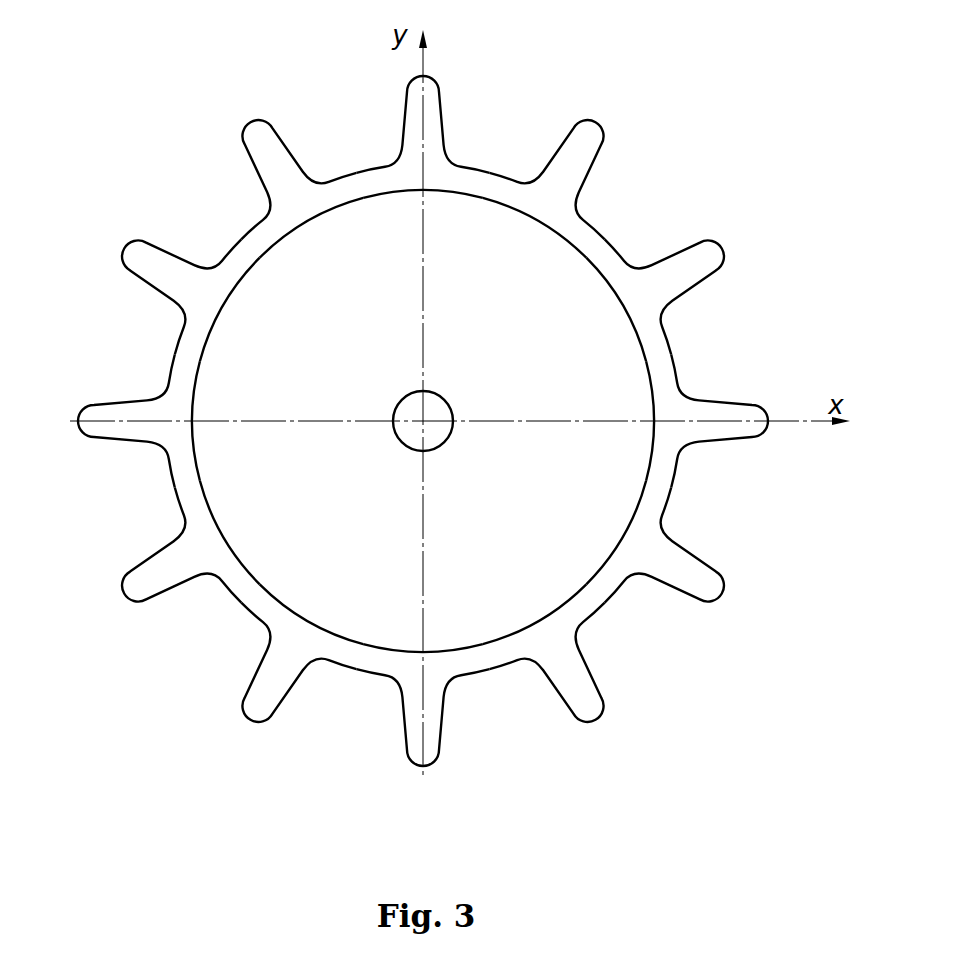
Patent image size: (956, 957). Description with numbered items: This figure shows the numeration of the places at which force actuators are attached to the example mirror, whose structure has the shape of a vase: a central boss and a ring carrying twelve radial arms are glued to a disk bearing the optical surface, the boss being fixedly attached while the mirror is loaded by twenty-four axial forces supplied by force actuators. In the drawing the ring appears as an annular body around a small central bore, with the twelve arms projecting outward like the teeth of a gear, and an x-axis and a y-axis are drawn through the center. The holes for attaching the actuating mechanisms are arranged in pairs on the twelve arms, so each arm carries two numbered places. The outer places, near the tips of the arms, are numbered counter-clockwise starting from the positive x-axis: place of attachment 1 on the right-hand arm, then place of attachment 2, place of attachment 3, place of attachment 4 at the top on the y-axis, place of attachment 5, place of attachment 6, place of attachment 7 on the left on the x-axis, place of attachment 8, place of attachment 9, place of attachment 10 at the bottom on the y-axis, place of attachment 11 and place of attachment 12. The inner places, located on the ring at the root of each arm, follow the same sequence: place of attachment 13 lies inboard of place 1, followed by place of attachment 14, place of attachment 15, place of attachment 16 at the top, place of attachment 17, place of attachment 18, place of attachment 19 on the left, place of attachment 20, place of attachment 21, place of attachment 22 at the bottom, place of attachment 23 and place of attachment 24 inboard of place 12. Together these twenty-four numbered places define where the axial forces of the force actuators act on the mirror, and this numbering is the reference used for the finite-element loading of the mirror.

The place of attachment for force actuator 1 is at (755, 416).
The place of attachment for force actuator 2 is at (688, 267).
The place of attachment for force actuator 3 is at (571, 148).
The place of attachment for force actuator 4 is at (423, 93).
The place of attachment for force actuator 5 is at (298, 148).
The place of attachment for force actuator 6 is at (166, 262).
The place of attachment for force actuator 7 is at (103, 406).
The place of attachment for force actuator 8 is at (147, 545).
The place of attachment for force actuator 9 is at (261, 669).
The place of attachment for force actuator 10 is at (411, 727).
The place of attachment for force actuator 11 is at (547, 685).
The place of attachment for force actuator 12 is at (664, 583).
The place of attachment for force actuator 13 is at (693, 413).
The place of attachment for force actuator 14 is at (639, 277).
The place of attachment for force actuator 15 is at (576, 182).
The place of attachment for force actuator 16 is at (430, 148).
The place of attachment for force actuator 17 is at (312, 182).
The place of attachment for force actuator 18 is at (211, 274).
The place of attachment for force actuator 19 is at (155, 411).
The place of attachment for force actuator 20 is at (188, 528).
The place of attachment for force actuator 21 is at (269, 626).
The place of attachment for force actuator 22 is at (410, 688).
The place of attachment for force actuator 23 is at (535, 654).
The place of attachment for force actuator 24 is at (671, 533).